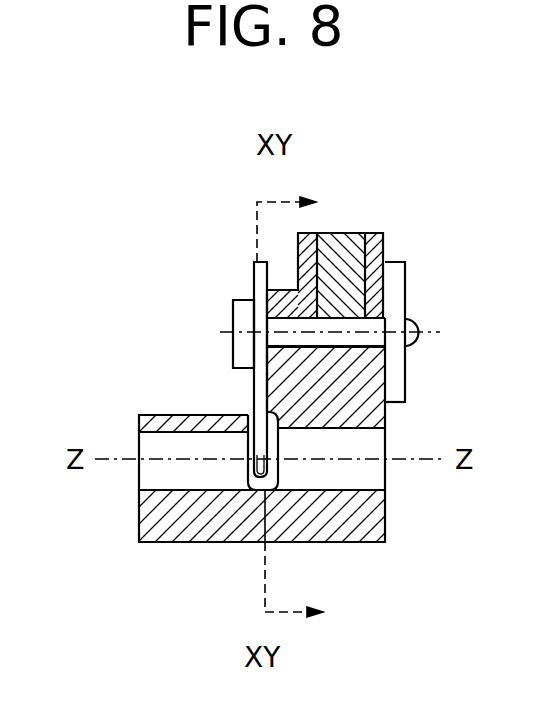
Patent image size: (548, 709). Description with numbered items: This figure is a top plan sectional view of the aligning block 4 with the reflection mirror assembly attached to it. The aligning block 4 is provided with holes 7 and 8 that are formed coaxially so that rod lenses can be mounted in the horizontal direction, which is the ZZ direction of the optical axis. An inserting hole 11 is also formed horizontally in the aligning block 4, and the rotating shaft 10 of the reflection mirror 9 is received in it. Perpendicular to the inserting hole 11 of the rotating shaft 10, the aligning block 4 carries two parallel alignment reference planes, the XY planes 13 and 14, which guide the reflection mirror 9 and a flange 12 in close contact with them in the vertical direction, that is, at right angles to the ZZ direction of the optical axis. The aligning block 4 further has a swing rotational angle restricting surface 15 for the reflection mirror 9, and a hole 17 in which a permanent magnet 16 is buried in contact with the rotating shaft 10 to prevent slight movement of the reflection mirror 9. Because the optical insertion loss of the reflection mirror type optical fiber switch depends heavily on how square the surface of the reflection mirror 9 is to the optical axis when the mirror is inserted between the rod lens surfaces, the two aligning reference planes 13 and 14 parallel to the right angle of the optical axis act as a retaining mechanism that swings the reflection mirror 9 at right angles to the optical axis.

The aligning block 4 is at (397, 505).
The hole 7 is at (196, 490).
The hole 8 is at (304, 490).
The reflection mirror 9 is at (255, 393).
The rotating shaft 10 is at (372, 347).
The inserting hole 11 is at (357, 343).
The flange 12 is at (405, 293).
The alignment reference plane 13 is at (253, 380).
The alignment reference plane 14 is at (387, 412).
The swing rotational angle restricting surface 15 is at (292, 290).
The permanent magnet 16 is at (352, 233).
The hole 17 is at (321, 268).